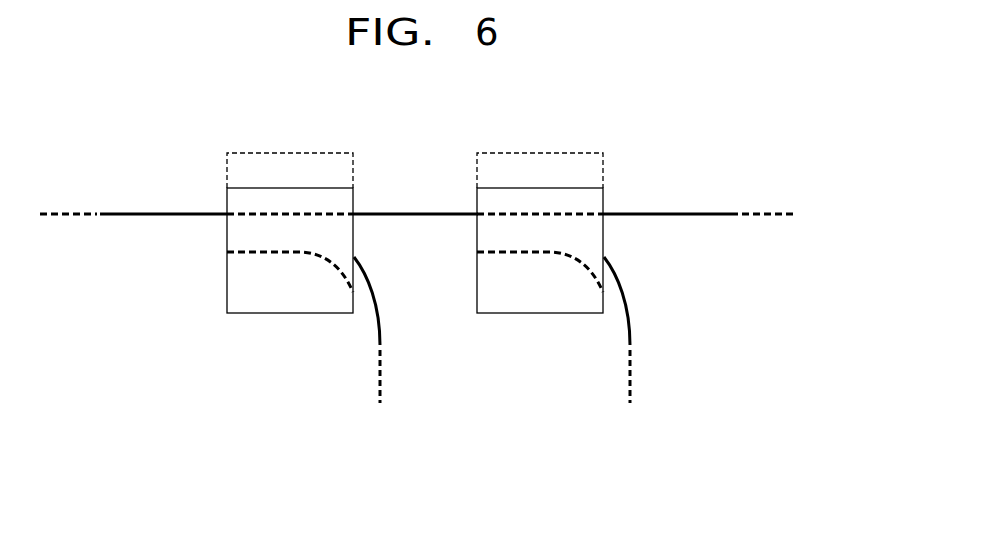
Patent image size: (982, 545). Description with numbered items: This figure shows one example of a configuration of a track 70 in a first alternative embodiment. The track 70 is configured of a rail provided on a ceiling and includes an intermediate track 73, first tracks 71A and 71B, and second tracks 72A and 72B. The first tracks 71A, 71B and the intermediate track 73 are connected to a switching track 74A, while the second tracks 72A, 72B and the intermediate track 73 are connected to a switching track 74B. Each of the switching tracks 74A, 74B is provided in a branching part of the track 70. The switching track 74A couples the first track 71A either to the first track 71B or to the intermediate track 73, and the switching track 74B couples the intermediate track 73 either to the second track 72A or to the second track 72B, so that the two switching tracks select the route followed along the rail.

The track 70 is at (417, 265).
The first track 71A is at (158, 211).
The first track 71B is at (377, 300).
The second track 72A is at (690, 211).
The second track 72B is at (627, 300).
The intermediate track 73 is at (418, 211).
The switching track 74A is at (287, 313).
The switching track 74B is at (541, 313).